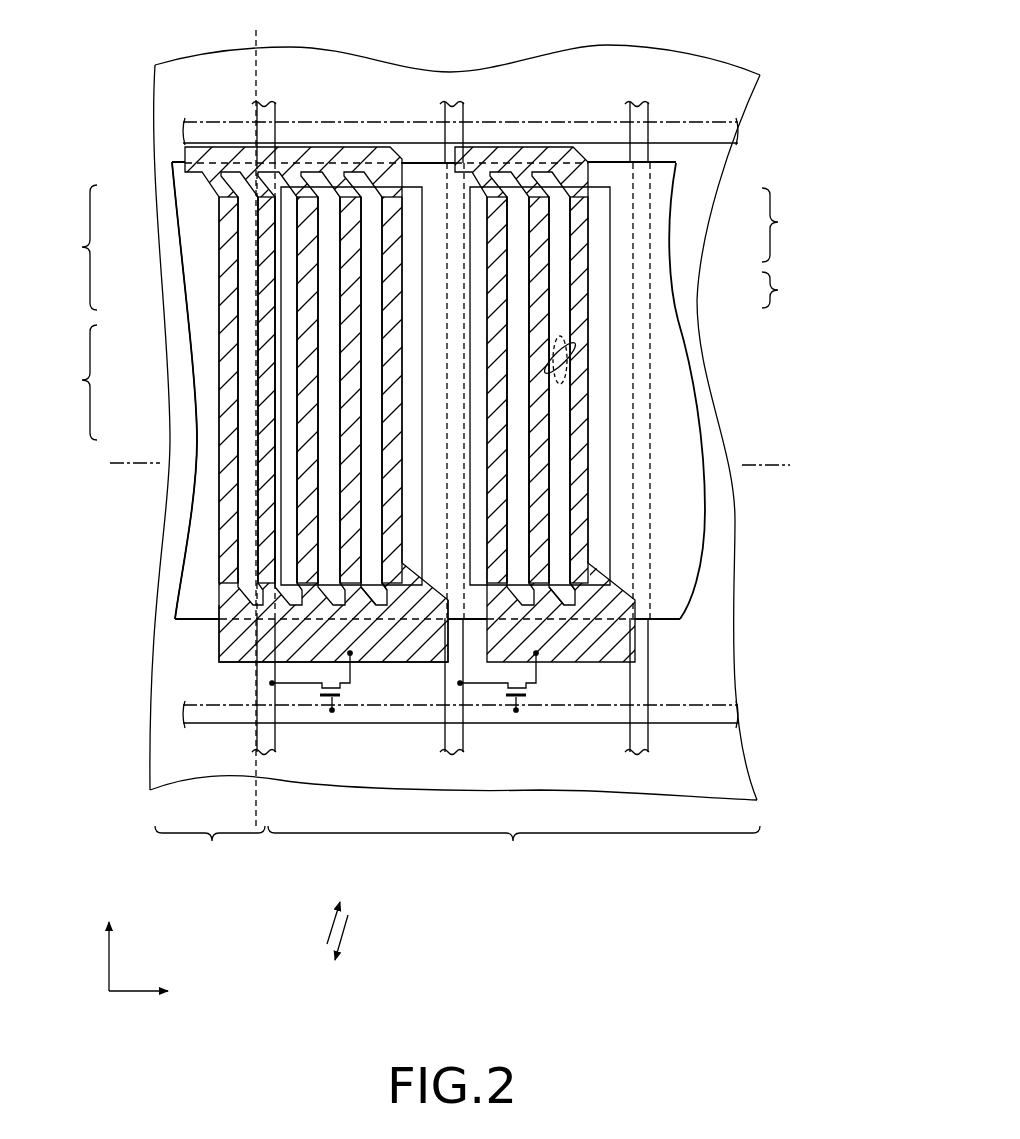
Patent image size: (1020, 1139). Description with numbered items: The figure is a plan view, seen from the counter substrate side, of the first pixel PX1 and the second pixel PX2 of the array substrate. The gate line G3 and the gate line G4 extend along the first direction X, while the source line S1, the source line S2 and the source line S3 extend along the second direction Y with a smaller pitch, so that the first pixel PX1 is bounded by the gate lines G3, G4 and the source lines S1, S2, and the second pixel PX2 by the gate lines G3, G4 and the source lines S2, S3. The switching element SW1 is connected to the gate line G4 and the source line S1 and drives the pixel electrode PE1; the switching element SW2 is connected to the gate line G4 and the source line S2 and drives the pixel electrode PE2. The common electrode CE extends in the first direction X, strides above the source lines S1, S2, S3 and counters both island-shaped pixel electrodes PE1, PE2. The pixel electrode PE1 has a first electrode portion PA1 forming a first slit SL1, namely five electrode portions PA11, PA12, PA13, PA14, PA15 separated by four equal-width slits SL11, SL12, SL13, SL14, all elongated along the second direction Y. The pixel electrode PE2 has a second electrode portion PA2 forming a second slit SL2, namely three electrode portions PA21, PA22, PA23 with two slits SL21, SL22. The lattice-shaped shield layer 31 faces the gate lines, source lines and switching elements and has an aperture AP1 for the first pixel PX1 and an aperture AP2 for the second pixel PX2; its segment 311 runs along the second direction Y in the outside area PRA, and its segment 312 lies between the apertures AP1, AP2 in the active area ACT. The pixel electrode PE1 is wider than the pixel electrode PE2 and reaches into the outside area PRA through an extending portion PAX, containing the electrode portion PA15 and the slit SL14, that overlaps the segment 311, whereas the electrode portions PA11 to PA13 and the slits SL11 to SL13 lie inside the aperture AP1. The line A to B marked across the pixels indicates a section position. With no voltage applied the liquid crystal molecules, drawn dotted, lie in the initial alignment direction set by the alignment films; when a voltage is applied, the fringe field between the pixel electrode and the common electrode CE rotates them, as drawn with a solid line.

The shield layer 31 is at (722, 786).
The segment of shield layer 311 is at (173, 546).
The segment of shield layer 312 is at (428, 497).
The common electrode CE is at (690, 512).
The gate line G3 is at (690, 133).
The gate line G4 is at (688, 724).
The source line S1 is at (266, 103).
The source line S2 is at (457, 103).
The source line S3 is at (641, 103).
The first pixel PX1 is at (246, 419).
The second pixel PX2 is at (636, 419).
The pixel electrode PE1 is at (246, 489).
The pixel electrode PE2 is at (636, 489).
The first electrode portion PA1 is at (223, 382).
The electrode portion PA11 is at (245, 208).
The electrode portion PA12 is at (350, 237).
The electrode portion PA13 is at (310, 260).
The electrode portion PA14 is at (392, 272).
The electrode portion PA15 is at (228, 297).
The second electrode portion PA2 is at (652, 385).
The electrode portion PA21 is at (583, 204).
The electrode portion PA22 is at (540, 222).
The electrode portion PA23 is at (498, 247).
The extending portion PAX is at (220, 603).
The first slit SL1 is at (213, 390).
The slit SL11 is at (372, 337).
The slit SL12 is at (331, 370).
The slit SL13 is at (288, 400).
The slit SL14 is at (250, 430).
The second slit SL2 is at (662, 390).
The slit SL21 is at (558, 282).
The slit SL22 is at (520, 300).
The switching element SW1 is at (313, 705).
The switching element SW2 is at (497, 705).
The aperture AP1 is at (373, 592).
The aperture AP2 is at (555, 590).
The outside area PRA is at (210, 450).
The active area ACT is at (514, 848).
The section line end A is at (124, 463).
The section line end B is at (774, 465).
The first direction X is at (149, 991).
The second direction Y is at (106, 943).